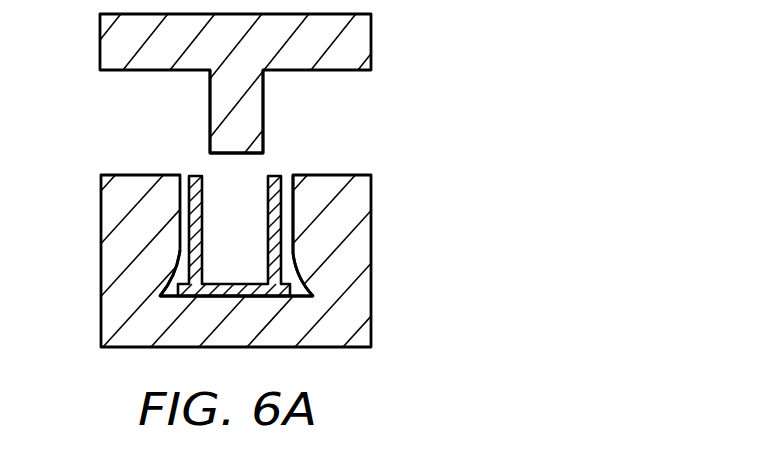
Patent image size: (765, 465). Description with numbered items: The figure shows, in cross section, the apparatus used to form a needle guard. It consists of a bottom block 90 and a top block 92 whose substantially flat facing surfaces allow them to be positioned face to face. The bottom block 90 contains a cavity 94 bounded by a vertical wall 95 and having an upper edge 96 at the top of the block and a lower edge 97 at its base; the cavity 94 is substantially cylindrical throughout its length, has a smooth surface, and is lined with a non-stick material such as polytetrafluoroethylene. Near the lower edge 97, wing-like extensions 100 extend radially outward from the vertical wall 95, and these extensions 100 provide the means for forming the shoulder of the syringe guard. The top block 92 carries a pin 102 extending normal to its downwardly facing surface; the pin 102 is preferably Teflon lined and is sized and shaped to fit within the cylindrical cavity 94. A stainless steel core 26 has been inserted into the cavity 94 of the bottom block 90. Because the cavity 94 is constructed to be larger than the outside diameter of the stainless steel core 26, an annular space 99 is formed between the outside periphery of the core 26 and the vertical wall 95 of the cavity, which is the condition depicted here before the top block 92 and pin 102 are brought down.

The top block 92 is at (370, 36).
The pin 102 is at (263, 96).
The bottom block 90 is at (371, 196).
The wing-like extensions 100 is at (178, 272).
The lower edge 97 is at (313, 295).
The vertical wall 95 is at (288, 224).
The cavity 94 is at (247, 229).
The upper edge 96 is at (184, 175).
The annular space 99 is at (284, 175).
The stainless steel core 26 is at (253, 285).